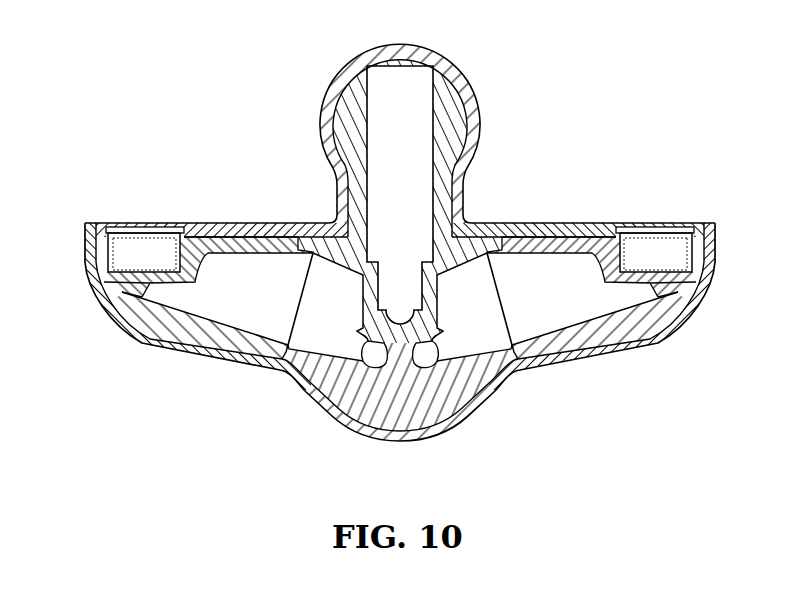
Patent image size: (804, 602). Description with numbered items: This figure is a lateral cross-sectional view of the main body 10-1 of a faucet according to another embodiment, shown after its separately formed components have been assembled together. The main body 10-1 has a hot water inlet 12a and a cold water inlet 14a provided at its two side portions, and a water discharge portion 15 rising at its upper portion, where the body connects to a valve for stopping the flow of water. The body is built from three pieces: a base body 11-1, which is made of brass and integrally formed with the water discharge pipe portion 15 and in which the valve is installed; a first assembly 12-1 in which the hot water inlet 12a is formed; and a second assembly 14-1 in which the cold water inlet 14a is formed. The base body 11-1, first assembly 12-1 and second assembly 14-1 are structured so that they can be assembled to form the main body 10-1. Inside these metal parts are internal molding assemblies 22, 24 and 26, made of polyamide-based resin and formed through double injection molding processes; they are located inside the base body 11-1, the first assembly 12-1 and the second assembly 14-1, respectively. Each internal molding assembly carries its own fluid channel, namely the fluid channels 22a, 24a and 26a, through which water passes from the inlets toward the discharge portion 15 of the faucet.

The main body 10-1 is at (275, 45).
The base body 11-1 is at (447, 422).
The first assembly 12-1 is at (677, 327).
The hot water inlet 12a is at (657, 228).
The second assembly 14-1 is at (123, 327).
The cold water inlet 14a is at (143, 226).
The water discharge portion 15 is at (463, 90).
The internal molding assembly 22 is at (372, 405).
The fluid channel 22a is at (470, 307).
The internal molding assembly 24 is at (630, 347).
The fluid channel 24a is at (556, 298).
The internal molding assembly 26 is at (172, 327).
The fluid channel 26a is at (234, 297).